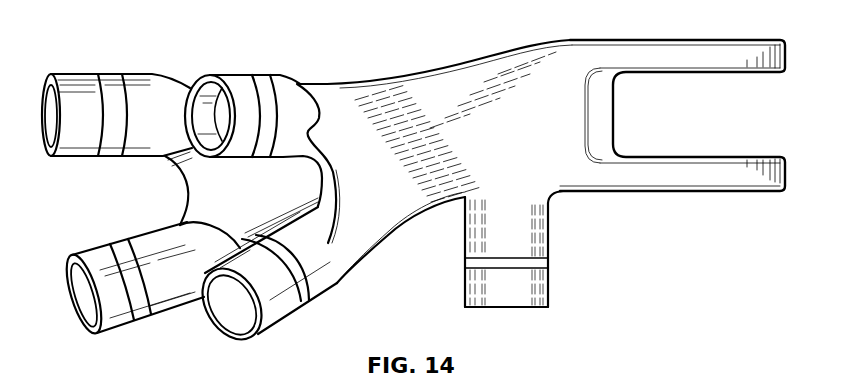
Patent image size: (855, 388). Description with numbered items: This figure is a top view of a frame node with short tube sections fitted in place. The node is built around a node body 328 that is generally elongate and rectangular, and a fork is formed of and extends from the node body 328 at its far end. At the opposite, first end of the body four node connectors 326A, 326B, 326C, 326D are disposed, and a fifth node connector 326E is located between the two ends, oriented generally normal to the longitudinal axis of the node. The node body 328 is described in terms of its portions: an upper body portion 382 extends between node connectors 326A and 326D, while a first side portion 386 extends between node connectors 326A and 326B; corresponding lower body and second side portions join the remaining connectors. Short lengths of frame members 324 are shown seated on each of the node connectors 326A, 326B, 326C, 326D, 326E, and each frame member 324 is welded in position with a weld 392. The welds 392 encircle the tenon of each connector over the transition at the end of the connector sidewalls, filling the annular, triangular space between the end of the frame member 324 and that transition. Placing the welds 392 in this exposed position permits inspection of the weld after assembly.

The frame member 324 is at (77, 74).
The weld 392 is at (109, 78).
The node connector 326A is at (329, 289).
The node connector 326B is at (181, 310).
The node connector 326C is at (157, 72).
The node connector 326D is at (281, 74).
The fifth node connector 326E is at (549, 242).
The upper body portion 382 is at (474, 91).
The node body 328 is at (557, 90).
The first side portion 386 is at (388, 239).